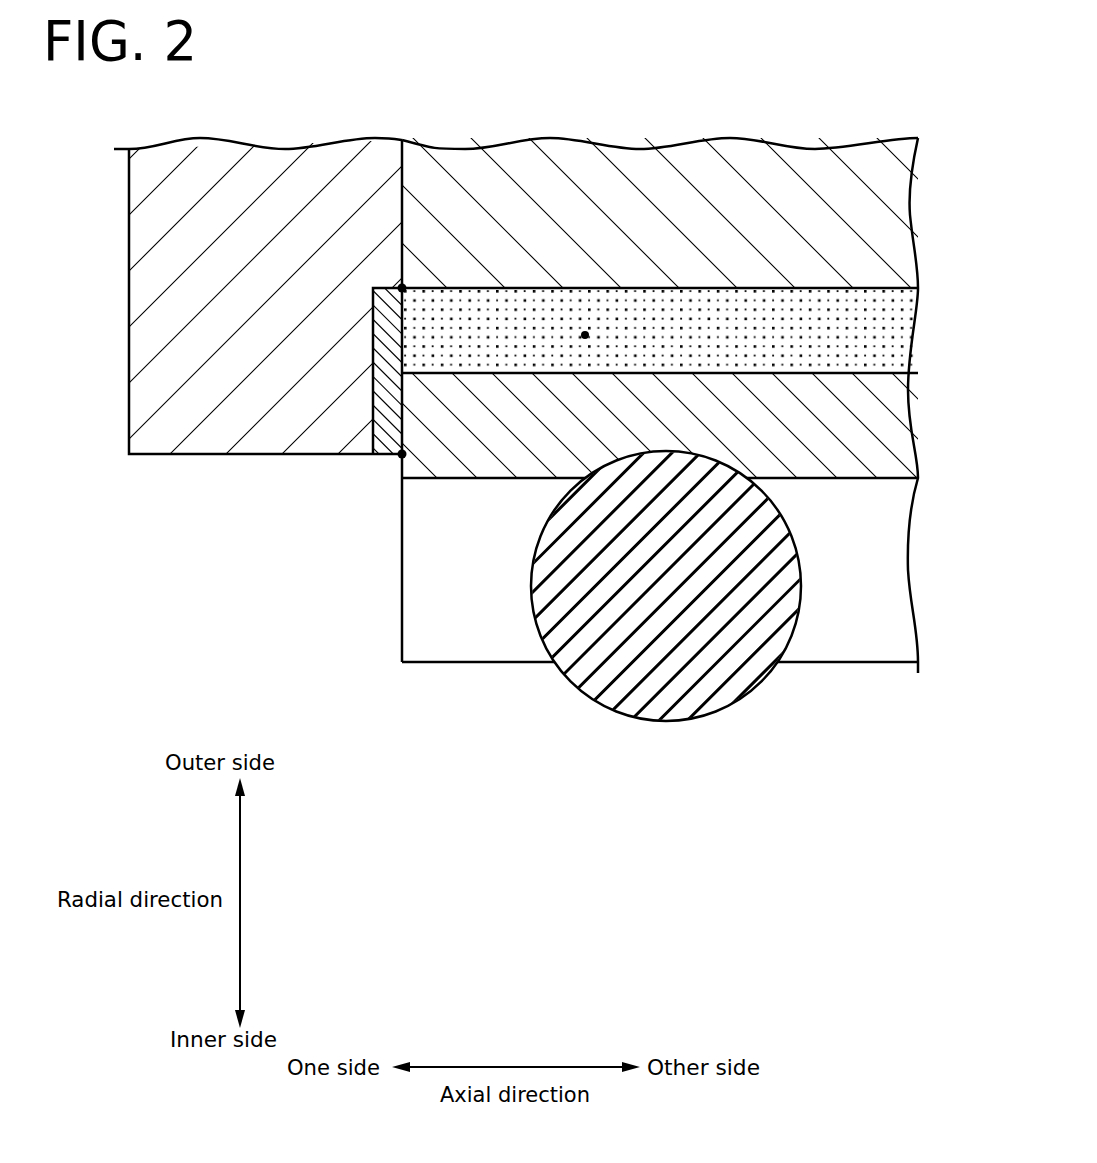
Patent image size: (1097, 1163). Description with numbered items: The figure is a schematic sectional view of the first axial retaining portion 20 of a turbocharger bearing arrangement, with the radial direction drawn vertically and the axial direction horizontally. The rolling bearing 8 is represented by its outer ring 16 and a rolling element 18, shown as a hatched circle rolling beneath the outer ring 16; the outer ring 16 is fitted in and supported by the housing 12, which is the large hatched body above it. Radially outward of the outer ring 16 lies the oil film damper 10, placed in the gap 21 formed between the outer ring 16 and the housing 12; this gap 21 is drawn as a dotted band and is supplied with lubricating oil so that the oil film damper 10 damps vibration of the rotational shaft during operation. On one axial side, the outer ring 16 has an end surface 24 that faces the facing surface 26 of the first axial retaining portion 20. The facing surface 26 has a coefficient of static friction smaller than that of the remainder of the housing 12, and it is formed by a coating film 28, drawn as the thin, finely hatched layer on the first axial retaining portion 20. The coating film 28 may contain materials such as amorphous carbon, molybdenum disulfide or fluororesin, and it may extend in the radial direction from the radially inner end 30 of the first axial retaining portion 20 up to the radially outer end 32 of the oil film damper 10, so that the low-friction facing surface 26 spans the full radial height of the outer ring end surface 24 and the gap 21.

The rolling bearing 8 is at (236, 608).
The oil film damper 10 is at (866, 288).
The housing 12 is at (688, 177).
The outer ring 16 is at (878, 479).
The rolling element 18 is at (718, 712).
The first axial retaining portion 20 is at (220, 455).
The gap 21 is at (585, 335).
The end surface 24 is at (403, 405).
The facing surface 26 is at (402, 455).
The coating film 28 is at (382, 456).
The radially inner end 30 is at (377, 445).
The radially outer end 32 is at (402, 288).